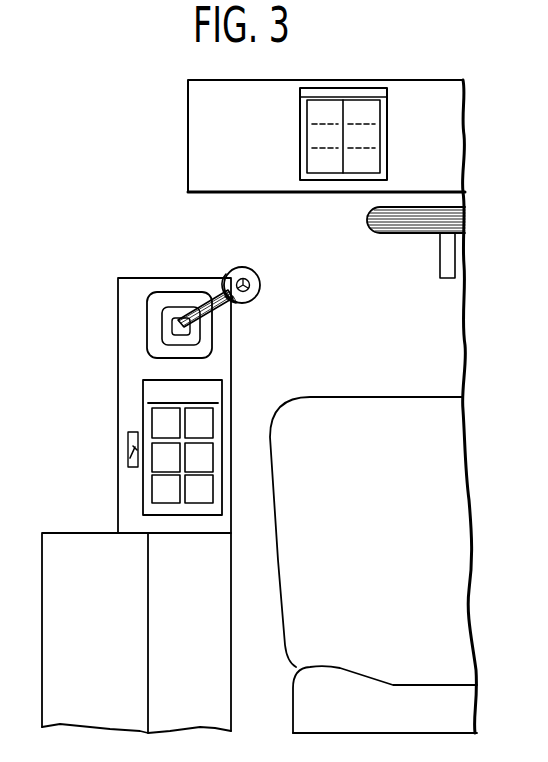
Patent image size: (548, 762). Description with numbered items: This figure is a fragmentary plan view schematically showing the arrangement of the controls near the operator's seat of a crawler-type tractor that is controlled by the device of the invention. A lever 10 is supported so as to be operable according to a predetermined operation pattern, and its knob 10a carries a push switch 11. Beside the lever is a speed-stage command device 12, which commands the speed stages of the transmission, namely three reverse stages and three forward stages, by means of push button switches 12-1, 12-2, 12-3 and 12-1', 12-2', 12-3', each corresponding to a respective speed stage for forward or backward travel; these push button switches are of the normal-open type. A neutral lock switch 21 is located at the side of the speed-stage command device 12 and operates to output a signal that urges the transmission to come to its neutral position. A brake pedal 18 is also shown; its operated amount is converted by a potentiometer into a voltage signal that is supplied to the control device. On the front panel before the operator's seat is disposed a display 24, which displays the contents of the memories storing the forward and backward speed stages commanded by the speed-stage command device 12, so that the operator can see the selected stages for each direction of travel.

The lever 10 is at (210, 303).
The knob 10a is at (242, 308).
The push switch 11 is at (261, 287).
The speed-stage command device 12 is at (196, 485).
The push button switch 12-1 is at (236, 406).
The push button switch 12-2 is at (256, 458).
The push button switch 12-3 is at (192, 537).
The push button switch 12-1' is at (122, 418).
The push button switch 12-2' is at (122, 480).
The push button switch 12-3' is at (180, 521).
The brake pedal 18 is at (393, 235).
The neutral lock switch 21 is at (132, 468).
The display 24 is at (300, 158).